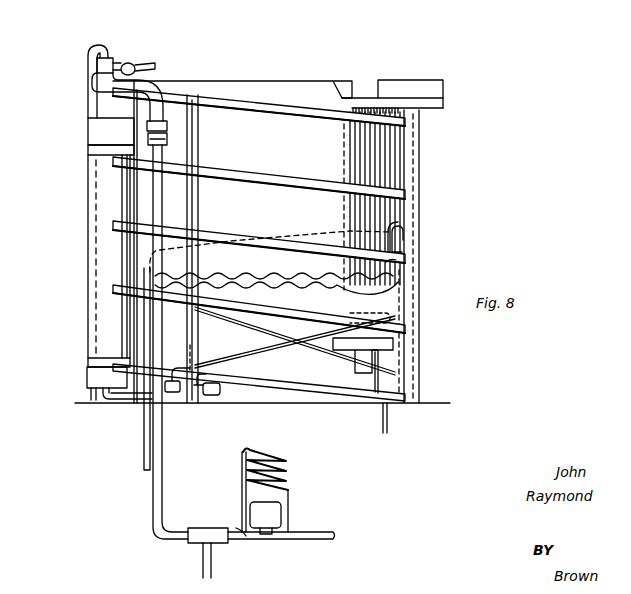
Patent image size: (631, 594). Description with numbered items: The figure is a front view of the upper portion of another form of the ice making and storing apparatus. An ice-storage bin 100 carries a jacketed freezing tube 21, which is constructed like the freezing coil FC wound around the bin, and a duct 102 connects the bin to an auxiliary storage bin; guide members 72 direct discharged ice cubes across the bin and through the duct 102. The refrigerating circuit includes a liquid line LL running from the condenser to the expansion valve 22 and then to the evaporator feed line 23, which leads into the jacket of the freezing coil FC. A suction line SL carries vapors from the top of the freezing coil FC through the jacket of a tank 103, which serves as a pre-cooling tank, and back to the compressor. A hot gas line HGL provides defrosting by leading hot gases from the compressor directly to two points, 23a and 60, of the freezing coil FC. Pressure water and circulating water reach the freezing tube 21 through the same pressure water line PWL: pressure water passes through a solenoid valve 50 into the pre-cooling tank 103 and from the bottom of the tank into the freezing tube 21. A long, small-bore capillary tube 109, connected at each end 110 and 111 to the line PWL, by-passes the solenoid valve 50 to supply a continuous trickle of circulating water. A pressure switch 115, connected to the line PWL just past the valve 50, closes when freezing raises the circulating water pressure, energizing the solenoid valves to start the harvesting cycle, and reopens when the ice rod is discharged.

The jacketed freezing tube 21 is at (127, 60).
The guide members 72 is at (147, 62).
The ice-storage bin 100 is at (302, 80).
The duct 102 is at (430, 94).
The tank 103 is at (95, 186).
The point of the freezing coil 60 is at (400, 250).
The evaporator feed line 23 is at (285, 348).
The expansion valve 22 is at (393, 358).
The point of the freezing coil 23a is at (222, 396).
The capillary tube 109 is at (277, 457).
The solenoid valve 50 is at (272, 515).
The end of capillary tube 110 is at (290, 532).
The end of capillary tube 111 is at (240, 532).
The pressure switch 115 is at (198, 544).
The suction line SL is at (88, 50).
The pressure water line PWL is at (150, 100).
The freezing coil FC is at (262, 176).
The hot gas line HGL is at (144, 462).
The liquid line LL is at (393, 428).